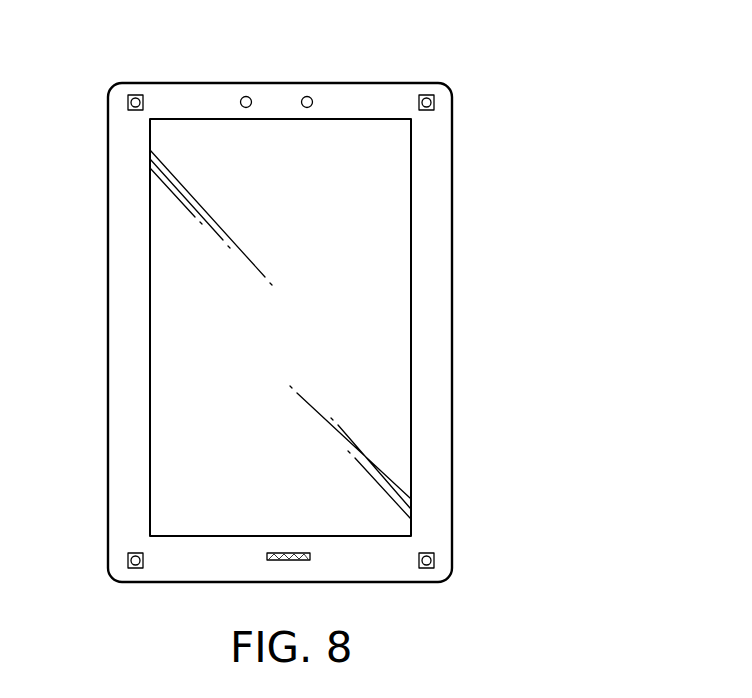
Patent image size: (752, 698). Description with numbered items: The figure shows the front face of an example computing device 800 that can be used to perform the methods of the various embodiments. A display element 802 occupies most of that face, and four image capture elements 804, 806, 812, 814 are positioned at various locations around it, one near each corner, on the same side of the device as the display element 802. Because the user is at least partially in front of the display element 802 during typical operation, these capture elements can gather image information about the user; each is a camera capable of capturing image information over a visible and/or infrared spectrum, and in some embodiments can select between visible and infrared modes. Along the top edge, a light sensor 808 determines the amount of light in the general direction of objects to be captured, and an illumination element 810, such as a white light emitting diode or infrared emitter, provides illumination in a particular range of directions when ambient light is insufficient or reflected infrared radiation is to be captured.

The computing device 800 is at (598, 134).
The display element 802 is at (147, 130).
The image capture element 804 is at (135, 95).
The image capture element 806 is at (427, 95).
The light sensor 808 is at (309, 96).
The illumination element 810 is at (244, 96).
The image capture element 812 is at (135, 568).
The image capture element 814 is at (427, 568).